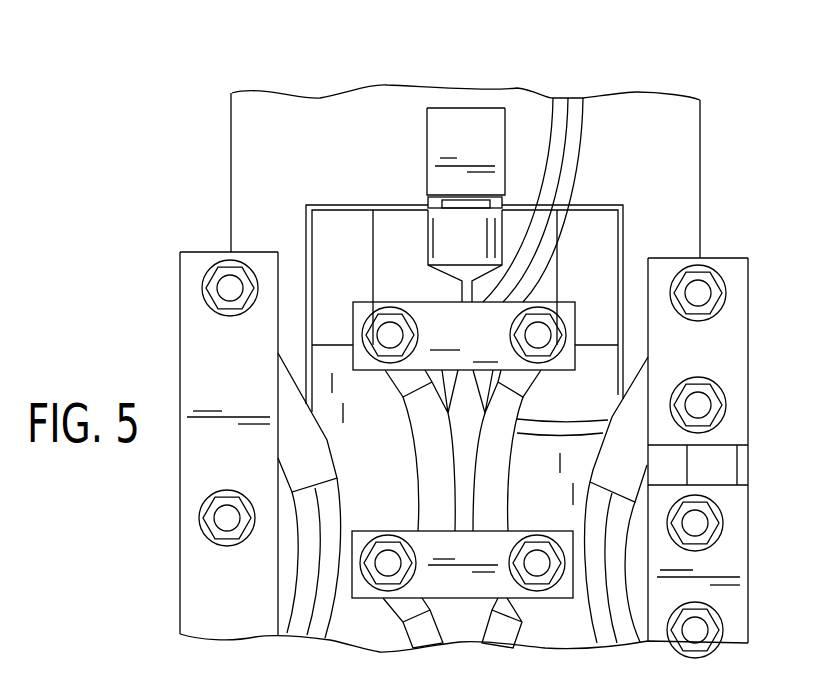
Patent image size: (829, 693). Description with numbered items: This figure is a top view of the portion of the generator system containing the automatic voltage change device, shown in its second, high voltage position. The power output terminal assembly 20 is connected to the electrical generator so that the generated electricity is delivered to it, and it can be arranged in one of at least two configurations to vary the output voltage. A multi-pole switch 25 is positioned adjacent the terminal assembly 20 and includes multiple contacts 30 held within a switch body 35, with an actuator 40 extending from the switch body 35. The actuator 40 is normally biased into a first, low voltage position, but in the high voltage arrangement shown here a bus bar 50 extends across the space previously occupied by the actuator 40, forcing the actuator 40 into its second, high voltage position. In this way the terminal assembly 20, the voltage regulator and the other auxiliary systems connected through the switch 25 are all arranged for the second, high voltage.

The power output terminal assembly 20 is at (592, 240).
The multi-pole switch 25 is at (414, 174).
The contacts 30 is at (428, 145).
The switch body 35 is at (485, 112).
The actuator 40 is at (457, 290).
The bus bar 50 is at (495, 337).